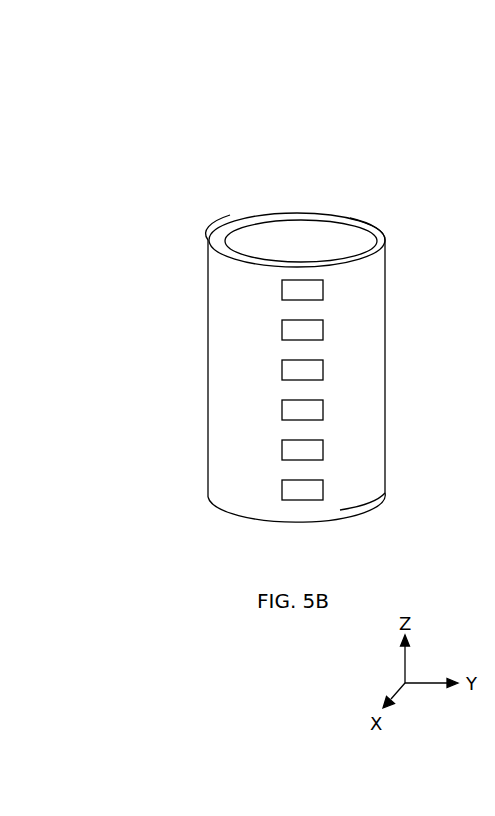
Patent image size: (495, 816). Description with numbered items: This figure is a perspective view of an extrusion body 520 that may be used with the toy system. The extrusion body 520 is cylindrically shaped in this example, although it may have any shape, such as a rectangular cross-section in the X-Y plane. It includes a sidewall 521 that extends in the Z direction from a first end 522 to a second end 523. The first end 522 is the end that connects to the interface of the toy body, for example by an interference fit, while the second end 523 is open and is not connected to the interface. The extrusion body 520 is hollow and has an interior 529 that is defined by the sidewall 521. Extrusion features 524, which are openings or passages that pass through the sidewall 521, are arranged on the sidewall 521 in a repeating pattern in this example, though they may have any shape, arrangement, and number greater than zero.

The extrusion body 520 is at (328, 353).
The sidewall 521 is at (222, 240).
The first end 522 is at (386, 495).
The second end 523 is at (386, 245).
The extrusion features 524 is at (317, 370).
The interior 529 is at (305, 248).